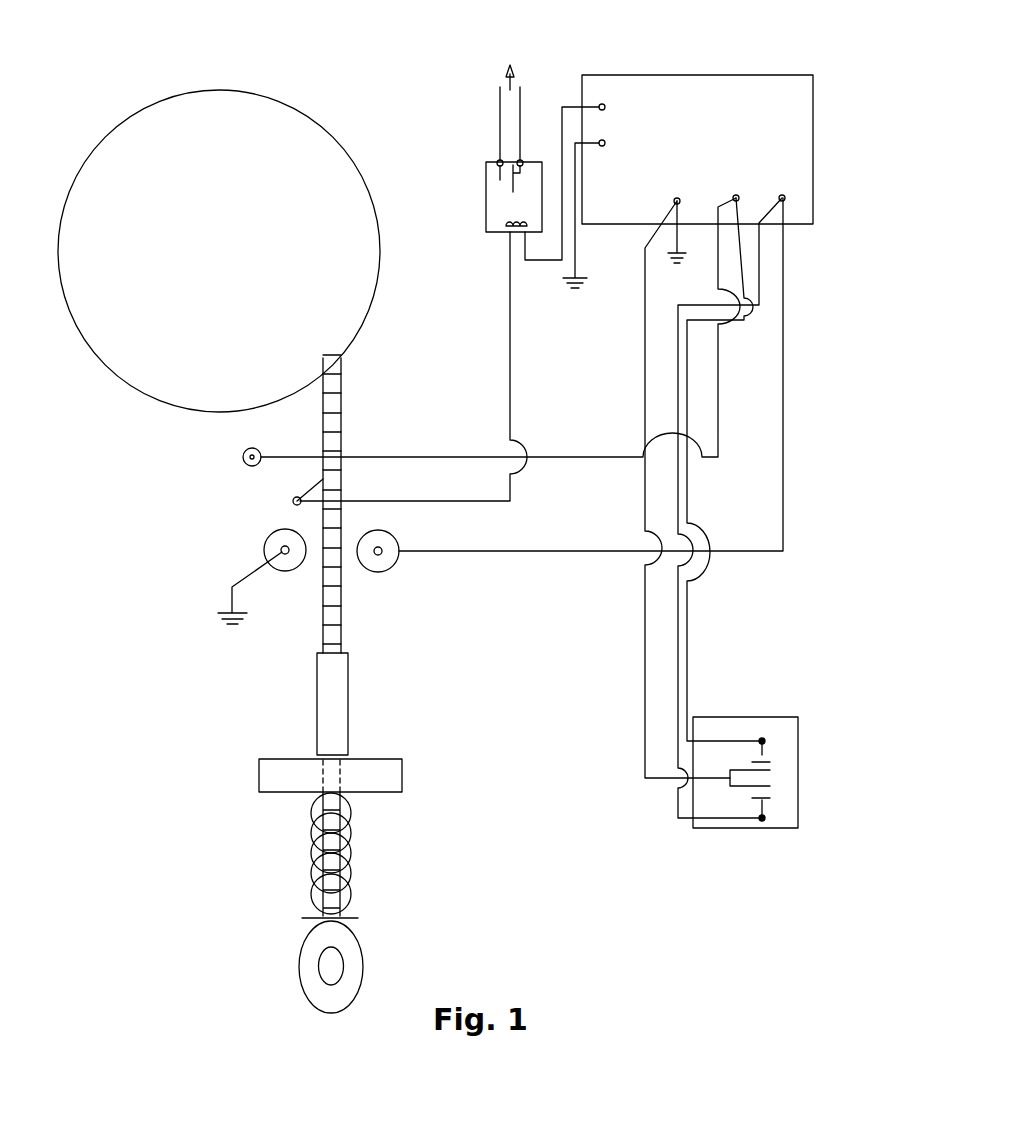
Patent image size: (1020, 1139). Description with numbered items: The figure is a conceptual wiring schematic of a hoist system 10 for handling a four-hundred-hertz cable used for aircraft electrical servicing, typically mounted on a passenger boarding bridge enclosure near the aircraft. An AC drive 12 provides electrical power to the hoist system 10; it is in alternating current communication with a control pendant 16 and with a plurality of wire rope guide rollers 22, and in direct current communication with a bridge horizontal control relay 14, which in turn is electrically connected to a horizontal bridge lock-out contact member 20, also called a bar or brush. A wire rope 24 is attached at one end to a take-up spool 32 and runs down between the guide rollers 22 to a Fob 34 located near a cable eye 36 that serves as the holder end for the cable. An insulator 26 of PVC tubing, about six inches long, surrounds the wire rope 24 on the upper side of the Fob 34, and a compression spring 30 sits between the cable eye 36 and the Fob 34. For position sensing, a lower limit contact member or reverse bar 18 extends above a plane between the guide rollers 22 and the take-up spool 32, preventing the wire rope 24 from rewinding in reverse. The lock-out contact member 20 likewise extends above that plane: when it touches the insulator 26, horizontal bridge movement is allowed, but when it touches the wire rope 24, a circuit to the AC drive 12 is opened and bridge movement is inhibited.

The hoist system 10 is at (172, 590).
The AC drive 12 is at (708, 75).
The bridge horizontal control relay 14 is at (486, 193).
The control pendant 16 is at (740, 828).
The lower limit contact member 18 is at (243, 453).
The horizontal bridge lock-out contact member 20 is at (293, 503).
The wire rope guide rollers 22 is at (388, 569).
The wire rope 24 is at (323, 633).
The insulator 26 is at (348, 700).
The compression spring 30 is at (350, 862).
The take-up spool 32 is at (315, 122).
The Fob 34 is at (402, 780).
The cable eye 36 is at (362, 958).